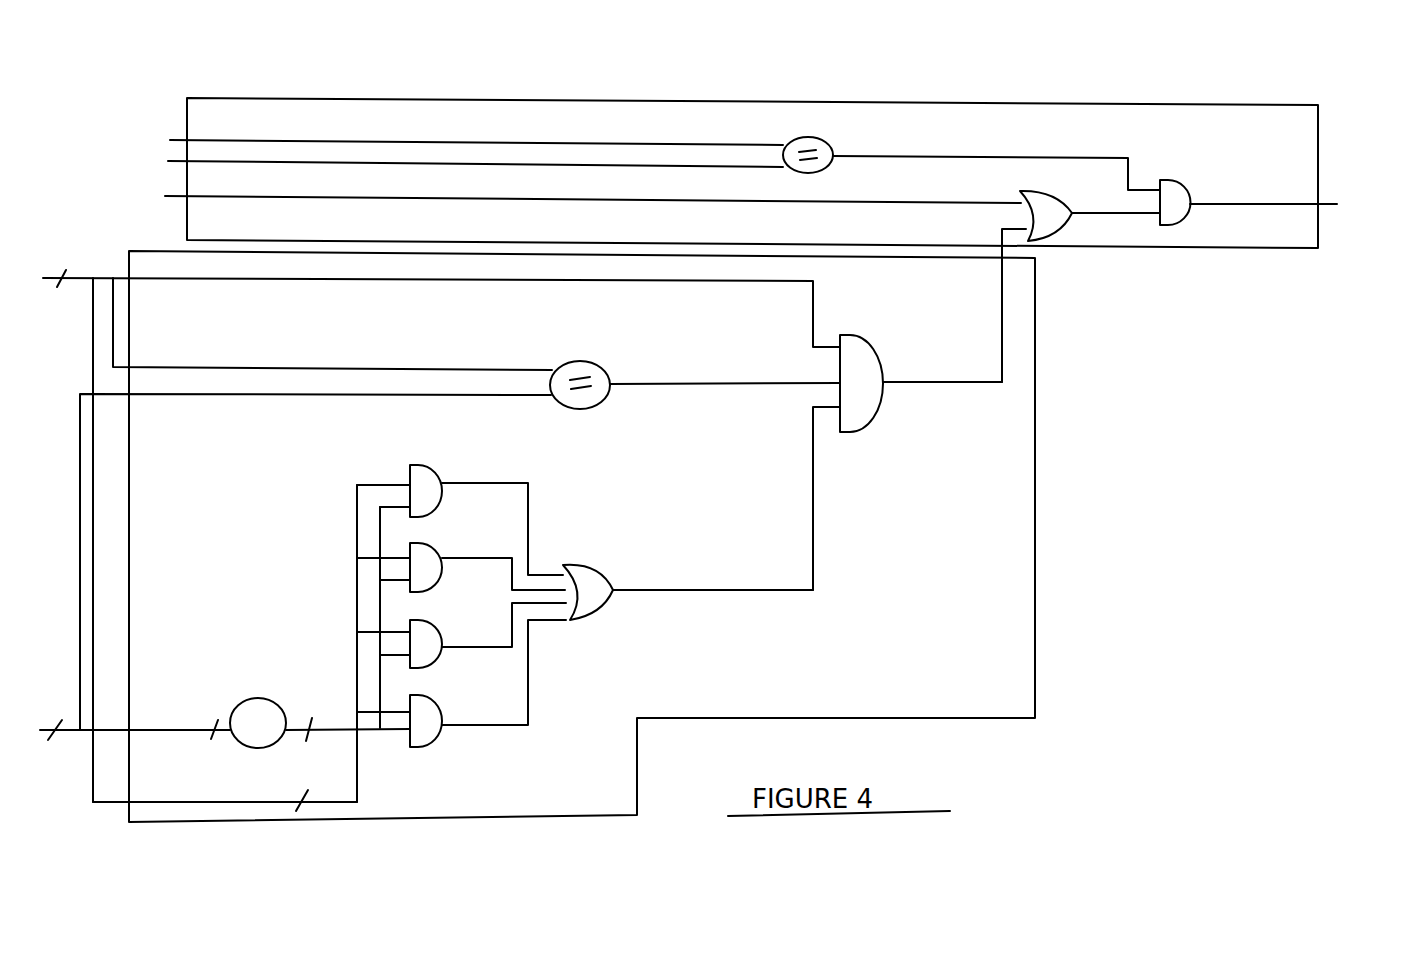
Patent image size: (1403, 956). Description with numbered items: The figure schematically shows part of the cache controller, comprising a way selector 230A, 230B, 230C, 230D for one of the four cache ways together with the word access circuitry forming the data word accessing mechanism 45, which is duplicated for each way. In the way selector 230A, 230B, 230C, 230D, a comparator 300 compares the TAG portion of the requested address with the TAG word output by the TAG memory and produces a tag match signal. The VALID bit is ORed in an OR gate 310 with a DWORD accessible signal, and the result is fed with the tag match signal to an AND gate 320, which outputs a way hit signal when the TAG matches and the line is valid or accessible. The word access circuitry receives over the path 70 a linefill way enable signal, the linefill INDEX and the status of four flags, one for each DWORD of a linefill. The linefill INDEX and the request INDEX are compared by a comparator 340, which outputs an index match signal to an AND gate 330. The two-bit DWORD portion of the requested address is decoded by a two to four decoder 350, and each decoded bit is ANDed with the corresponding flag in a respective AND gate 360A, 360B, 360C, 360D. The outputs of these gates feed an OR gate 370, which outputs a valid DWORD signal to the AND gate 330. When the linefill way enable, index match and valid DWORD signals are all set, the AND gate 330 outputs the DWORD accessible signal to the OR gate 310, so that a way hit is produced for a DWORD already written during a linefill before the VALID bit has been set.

The way selector 230A is at (1158, 105).
The way selector 230B is at (752, 173).
The way selector 230C is at (752, 173).
The way selector 230D is at (752, 173).
The comparator 300 is at (794, 140).
The OR gate 310 is at (1048, 190).
The AND gate 320 is at (1176, 180).
The AND gate 330 is at (872, 405).
The comparator 340 is at (615, 400).
The two to four decoder 350 is at (254, 699).
The AND gate 360A is at (428, 470).
The AND gate 360B is at (428, 549).
The AND gate 360C is at (424, 628).
The AND gate 360D is at (426, 704).
The OR gate 370 is at (606, 607).
The data word accessing mechanism 45 is at (1034, 618).
The path 70 is at (74, 277).